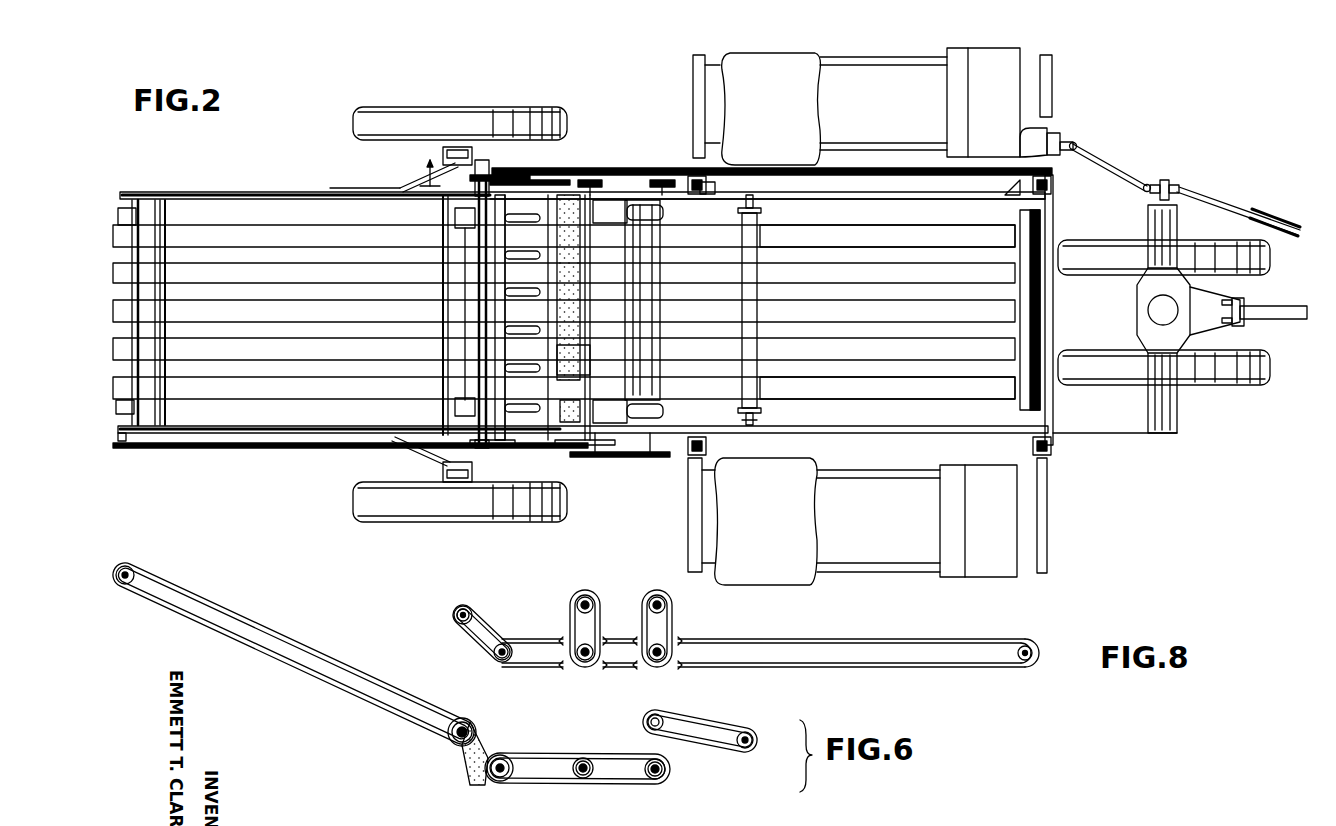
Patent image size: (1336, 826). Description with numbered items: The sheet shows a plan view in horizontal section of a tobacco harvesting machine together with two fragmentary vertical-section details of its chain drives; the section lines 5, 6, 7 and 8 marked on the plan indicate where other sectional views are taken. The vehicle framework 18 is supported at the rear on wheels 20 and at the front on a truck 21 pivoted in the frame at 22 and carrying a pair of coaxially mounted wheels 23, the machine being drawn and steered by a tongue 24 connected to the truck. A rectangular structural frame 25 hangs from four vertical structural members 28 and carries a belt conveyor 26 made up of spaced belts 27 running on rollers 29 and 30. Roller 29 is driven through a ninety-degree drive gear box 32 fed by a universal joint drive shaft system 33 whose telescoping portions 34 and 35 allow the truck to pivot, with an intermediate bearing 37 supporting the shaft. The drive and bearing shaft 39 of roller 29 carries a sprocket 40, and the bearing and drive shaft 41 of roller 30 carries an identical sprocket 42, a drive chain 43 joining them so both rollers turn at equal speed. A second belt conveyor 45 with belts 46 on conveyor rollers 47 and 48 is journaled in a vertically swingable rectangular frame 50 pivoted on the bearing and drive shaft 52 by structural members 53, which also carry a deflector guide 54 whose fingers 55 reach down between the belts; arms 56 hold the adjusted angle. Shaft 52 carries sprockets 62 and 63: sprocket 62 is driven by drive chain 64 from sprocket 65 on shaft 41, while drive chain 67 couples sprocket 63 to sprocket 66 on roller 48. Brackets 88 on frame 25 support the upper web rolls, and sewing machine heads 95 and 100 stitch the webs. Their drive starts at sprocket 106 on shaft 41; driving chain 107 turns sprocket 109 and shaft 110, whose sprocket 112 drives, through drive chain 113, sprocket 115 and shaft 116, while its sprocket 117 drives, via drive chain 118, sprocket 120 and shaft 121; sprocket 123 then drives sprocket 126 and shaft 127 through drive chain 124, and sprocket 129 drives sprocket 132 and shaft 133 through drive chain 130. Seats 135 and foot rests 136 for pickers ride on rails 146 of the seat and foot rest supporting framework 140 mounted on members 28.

In FIG. 2, the section line 5 is at (95, 412).
In FIG. 2, the section line 6 is at (95, 448).
In FIG. 2, the frame beam 7 is at (678, 170).
In FIG. 2, the section line 8 is at (425, 165).
In FIG. 2, the vehicle framework 18 is at (1078, 155).
In FIG. 2, the wheels 20 is at (565, 122).
In FIG. 2, the truck 21 is at (1230, 297).
In FIG. 2, the pivot 22 is at (1150, 309).
In FIG. 2, the wheels 23 is at (1270, 265).
In FIG. 2, the tongue 24 is at (1262, 322).
In FIG. 2, the rectangular structural frame 25 is at (1053, 412).
In FIG. 2, the belt conveyor 26 is at (935, 420).
In FIG. 2, the belts 27 is at (812, 262).
In FIG. 2, the vertical structural members 28 is at (706, 185).
In FIG. 2, the roller 29 is at (1020, 408).
In FIG. 2, the roller 30 is at (568, 415).
In FIG. 2, the 90° drive gear box 32 is at (1050, 134).
In FIG. 2, the universal joint drive shaft system 33 is at (1208, 182).
In FIG. 2, the telescoping portion 34 is at (1108, 162).
In FIG. 2, the telescoping portion 35 is at (1278, 222).
In FIG. 2, the intermediate bearing 37 is at (1166, 178).
In FIG. 2, the drive and bearing shaft 39 is at (1020, 205).
In FIG. 8, the sprocket 40 is at (1035, 662).
In FIG. 2, the bearing and drive shaft 41 is at (520, 180).
In FIG. 8, the bearing and drive shaft 41 is at (506, 640).
In FIG. 2, the sprocket 42 is at (498, 176).
In FIG. 2, the drive chain 43 is at (598, 172).
In FIG. 8, the drive chain 43 is at (850, 646).
In FIG. 2, the second belt conveyor 45 is at (285, 184).
In FIG. 2, the belts 46 is at (316, 270).
In FIG. 2, the conveyor roller 47 is at (455, 215).
In FIG. 2, the conveyor roller 48 is at (120, 215).
In FIG. 2, the vertically swingable rectangular frame 50 is at (215, 193).
In FIG. 2, the bearing and drive shaft 52 is at (452, 408).
In FIG. 8, the bearing and drive shaft 52 is at (453, 614).
In FIG. 2, the structural members 53 is at (484, 180).
In FIG. 8, the structural members 53 is at (470, 775).
In FIG. 2, the deflector guide 54 is at (508, 446).
In FIG. 2, the fingers 55 is at (528, 214).
In FIG. 2, the arms 56 is at (412, 180).
In FIG. 8, the sprocket 62 is at (463, 608).
In FIG. 8, the sprocket 63 is at (462, 722).
In FIG. 8, the drive chain 64 is at (490, 622).
In FIG. 8, the sprocket 65 is at (492, 658).
In FIG. 8, the sprocket 66 is at (135, 578).
In FIG. 2, the drive chain 67 is at (280, 450).
In FIG. 8, the drive chain 67 is at (278, 636).
In FIG. 2, the brackets 88 is at (760, 192).
In FIG. 2, the sewing machine heads 95 is at (664, 212).
In FIG. 2, the sewing machine heads 100 is at (569, 317).
In FIG. 8, the sprocket 106 is at (505, 780).
In FIG. 2, the driving chain 107 is at (545, 446).
In FIG. 8, the driving chain 107 is at (563, 784).
In FIG. 2, the sprocket 109 is at (605, 457).
In FIG. 2, the shaft 110 is at (612, 428).
In FIG. 8, the shaft 110 is at (588, 660).
In FIG. 8, the sprocket 112 is at (580, 662).
In FIG. 2, the drive chain 113 is at (606, 180).
In FIG. 8, the drive chain 113 is at (600, 634).
In FIG. 8, the sprocket 115 is at (599, 592).
In FIG. 2, the shaft 116 is at (610, 317).
In FIG. 8, the shaft 116 is at (577, 602).
In FIG. 8, the sprocket 117 is at (583, 758).
In FIG. 8, the drive chain 118 is at (635, 785).
In FIG. 8, the sprocket 120 is at (650, 785).
In FIG. 2, the shaft 121 is at (648, 455).
In FIG. 8, the shaft 121 is at (652, 662).
In FIG. 8, the sprocket 123 is at (665, 660).
In FIG. 8, the drive chain 124 is at (674, 636).
In FIG. 8, the sprocket 126 is at (650, 598).
In FIG. 2, the shaft 127 is at (650, 362).
In FIG. 8, the shaft 127 is at (663, 598).
In FIG. 6, the shaft 127 is at (660, 716).
In FIG. 6, the sprocket 129 is at (647, 720).
In FIG. 2, the drive chain 130 is at (774, 410).
In FIG. 6, the drive chain 130 is at (740, 722).
In FIG. 6, the sprocket 132 is at (752, 730).
In FIG. 6, the shaft 133 is at (755, 744).
In FIG. 2, the seats 135 is at (790, 114).
In FIG. 2, the foot rests 136 is at (1020, 112).
In FIG. 2, the seat and foot rest supporting framework 140 is at (693, 98).
In FIG. 2, the rails 146 is at (884, 68).